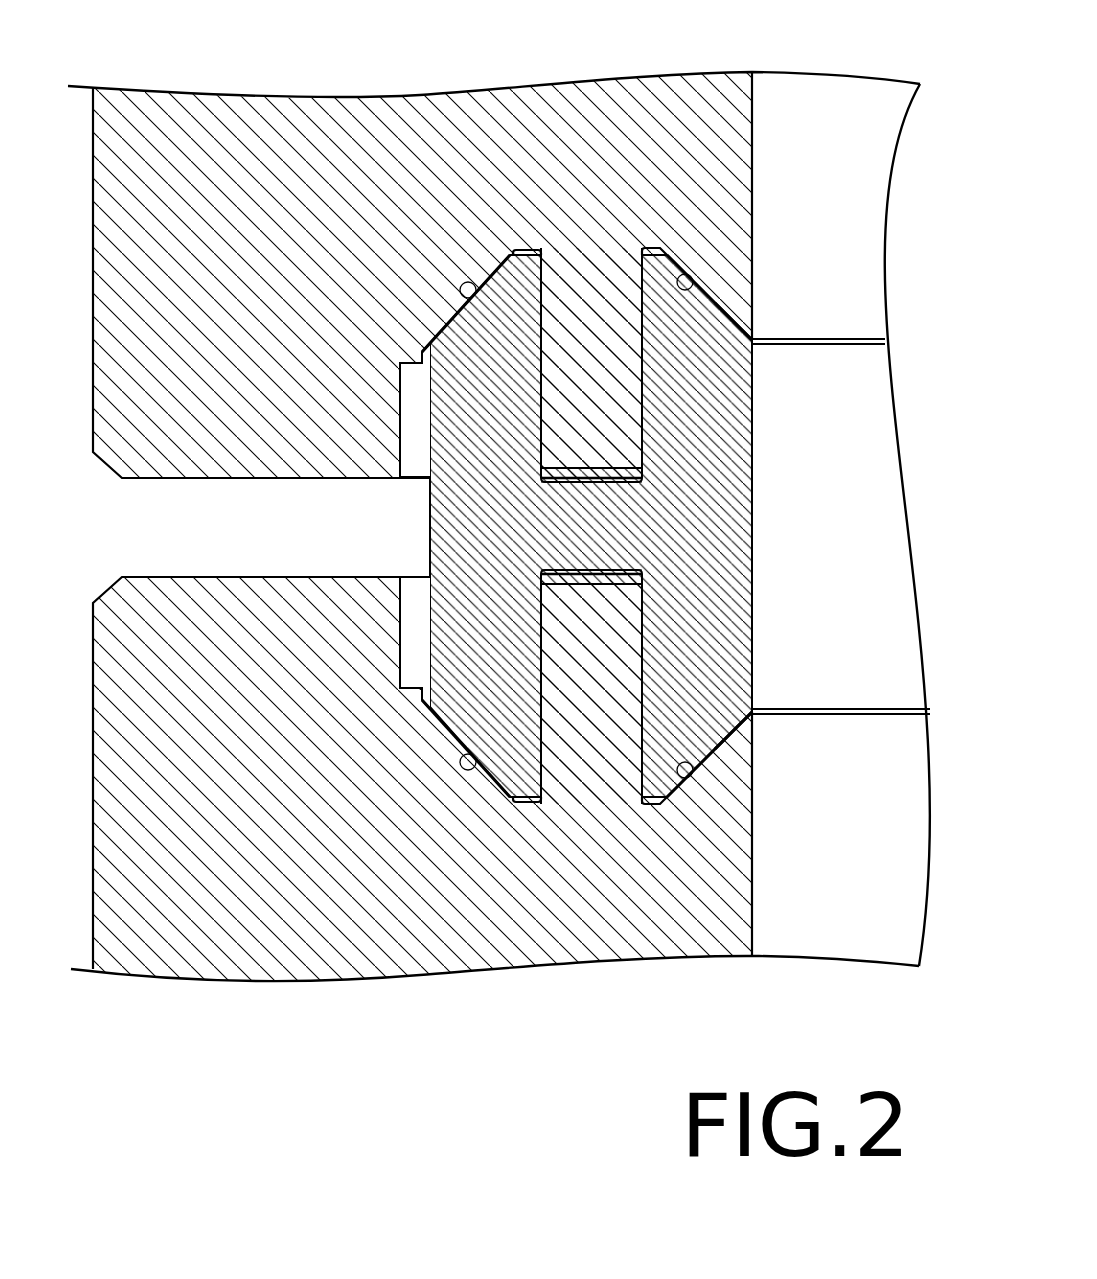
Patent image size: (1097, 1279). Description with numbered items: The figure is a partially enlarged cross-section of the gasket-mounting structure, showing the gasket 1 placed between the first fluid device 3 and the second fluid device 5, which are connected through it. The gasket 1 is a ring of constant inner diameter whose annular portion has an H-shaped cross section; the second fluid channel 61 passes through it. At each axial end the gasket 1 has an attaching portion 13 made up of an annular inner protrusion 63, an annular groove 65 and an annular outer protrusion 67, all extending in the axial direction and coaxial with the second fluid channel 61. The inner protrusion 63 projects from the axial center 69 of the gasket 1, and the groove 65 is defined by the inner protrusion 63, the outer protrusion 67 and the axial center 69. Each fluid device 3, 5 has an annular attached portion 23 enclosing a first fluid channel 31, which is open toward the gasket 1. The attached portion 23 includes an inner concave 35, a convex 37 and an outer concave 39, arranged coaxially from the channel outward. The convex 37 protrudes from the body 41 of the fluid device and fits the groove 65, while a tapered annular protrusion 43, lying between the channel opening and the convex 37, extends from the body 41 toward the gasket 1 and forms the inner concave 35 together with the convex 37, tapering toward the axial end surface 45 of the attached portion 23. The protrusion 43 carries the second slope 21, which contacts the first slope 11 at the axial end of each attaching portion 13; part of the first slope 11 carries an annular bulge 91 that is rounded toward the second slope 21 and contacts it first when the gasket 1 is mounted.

The gasket 1 is at (507, 546).
The first fluid device 3 is at (103, 587).
The second fluid device 5 is at (103, 468).
The first slope 11 is at (470, 292).
The attaching portion 13 is at (543, 247).
The second slope 21 is at (452, 328).
The attached portion 23 is at (181, 481).
The first fluid channel 31 is at (855, 141).
The inner concave 35 is at (655, 246).
The convex 37 is at (647, 377).
The outer concave 39 is at (526, 246).
The body 41 is at (738, 134).
The protrusion 43 is at (737, 307).
The axial end surface 45 is at (272, 479).
The second fluid channel 61 is at (852, 596).
The inner protrusion 63 is at (756, 372).
The groove 65 is at (647, 478).
The outer protrusion 67 is at (428, 422).
The axial center 69 is at (630, 528).
The bulge 91 is at (512, 252).